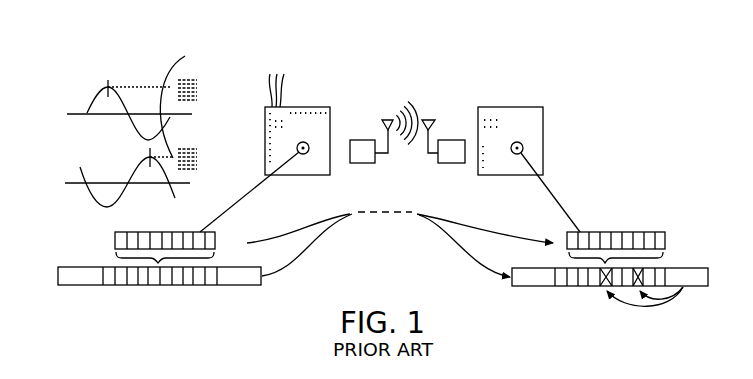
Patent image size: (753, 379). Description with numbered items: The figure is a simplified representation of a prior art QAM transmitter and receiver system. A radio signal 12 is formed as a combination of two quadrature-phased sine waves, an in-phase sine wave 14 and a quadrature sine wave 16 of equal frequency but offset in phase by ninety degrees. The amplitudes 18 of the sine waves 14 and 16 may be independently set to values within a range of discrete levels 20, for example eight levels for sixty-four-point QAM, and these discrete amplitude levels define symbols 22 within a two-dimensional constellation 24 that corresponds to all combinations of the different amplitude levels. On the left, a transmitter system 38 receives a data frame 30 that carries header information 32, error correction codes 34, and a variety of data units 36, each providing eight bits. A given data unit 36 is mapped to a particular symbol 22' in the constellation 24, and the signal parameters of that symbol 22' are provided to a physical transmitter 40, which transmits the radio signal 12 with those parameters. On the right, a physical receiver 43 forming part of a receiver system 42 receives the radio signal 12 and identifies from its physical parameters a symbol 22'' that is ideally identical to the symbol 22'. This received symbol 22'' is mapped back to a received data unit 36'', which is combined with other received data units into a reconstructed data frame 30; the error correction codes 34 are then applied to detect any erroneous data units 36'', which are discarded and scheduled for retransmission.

The radio signal 12 is at (97, 50).
The in-phase (I) sine wave 14 is at (92, 100).
The quadrature (Q) sine wave 16 is at (83, 169).
The amplitudes 18 is at (148, 86).
The discrete levels 20 is at (220, 77).
The symbols 22 is at (275, 81).
The particular symbol 22' is at (310, 174).
The received symbol 22'' is at (555, 135).
The two-dimensional constellation 24 is at (317, 107).
The data frame 30 is at (101, 299).
The header information 32 is at (78, 267).
The error correction codes 34 is at (236, 282).
The data units 36 is at (130, 275).
The received data unit 36'' is at (618, 222).
The transmitter system 38 is at (320, 63).
The physical transmitter 40 is at (363, 163).
The receiver system 42 is at (492, 77).
The physical receiver 43 is at (453, 163).